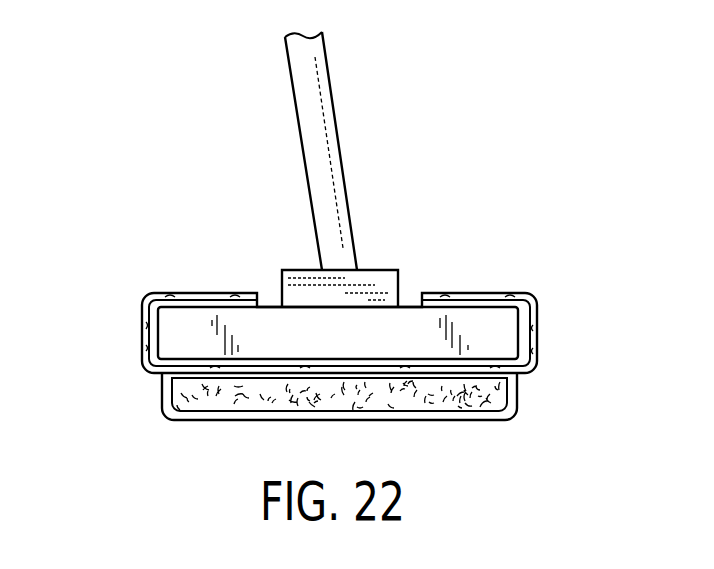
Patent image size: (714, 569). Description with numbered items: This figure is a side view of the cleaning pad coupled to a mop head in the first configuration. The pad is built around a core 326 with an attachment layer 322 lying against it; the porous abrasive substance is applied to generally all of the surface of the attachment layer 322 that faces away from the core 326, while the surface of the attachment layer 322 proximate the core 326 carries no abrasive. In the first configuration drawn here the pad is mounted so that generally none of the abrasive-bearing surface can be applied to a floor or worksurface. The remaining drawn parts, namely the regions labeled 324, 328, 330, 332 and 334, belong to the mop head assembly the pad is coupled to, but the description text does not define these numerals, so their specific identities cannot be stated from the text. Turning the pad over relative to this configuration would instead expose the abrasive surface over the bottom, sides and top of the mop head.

The attachment layer 322 is at (143, 322).
The cavity 324 is at (198, 307).
The core 326 is at (170, 397).
The pad cover 328 is at (228, 421).
The handle mount 330 is at (270, 307).
The handle 332 is at (323, 143).
The lips 334 is at (185, 280).